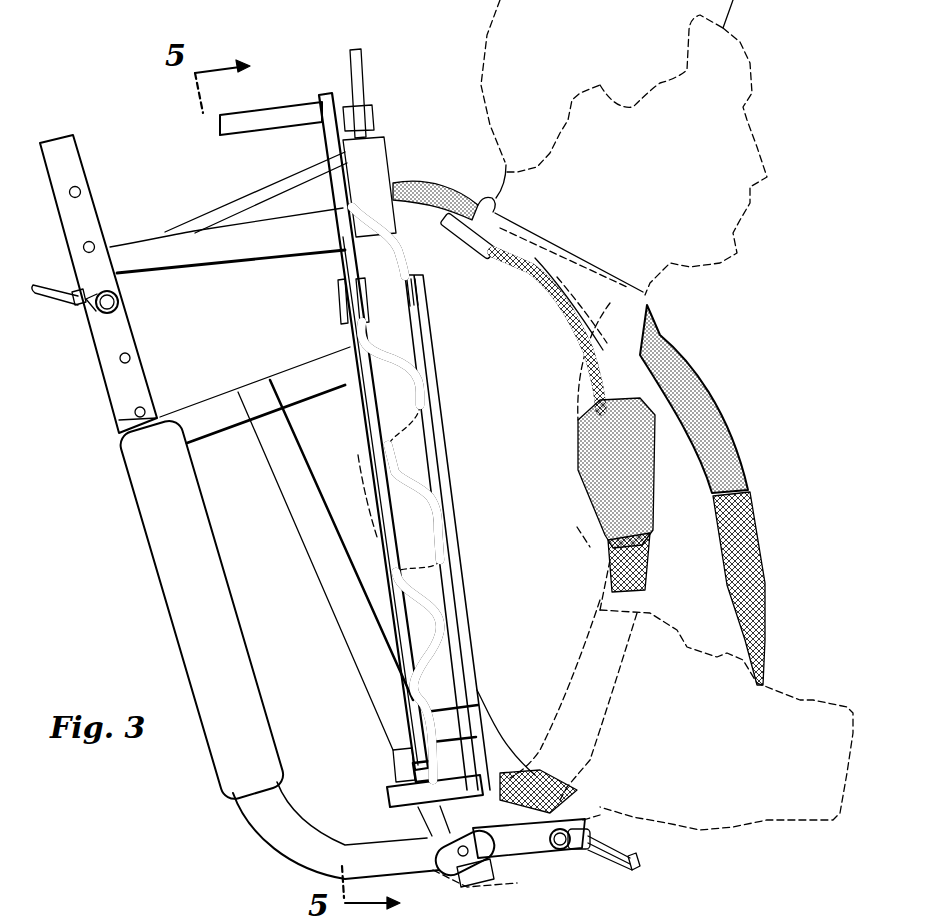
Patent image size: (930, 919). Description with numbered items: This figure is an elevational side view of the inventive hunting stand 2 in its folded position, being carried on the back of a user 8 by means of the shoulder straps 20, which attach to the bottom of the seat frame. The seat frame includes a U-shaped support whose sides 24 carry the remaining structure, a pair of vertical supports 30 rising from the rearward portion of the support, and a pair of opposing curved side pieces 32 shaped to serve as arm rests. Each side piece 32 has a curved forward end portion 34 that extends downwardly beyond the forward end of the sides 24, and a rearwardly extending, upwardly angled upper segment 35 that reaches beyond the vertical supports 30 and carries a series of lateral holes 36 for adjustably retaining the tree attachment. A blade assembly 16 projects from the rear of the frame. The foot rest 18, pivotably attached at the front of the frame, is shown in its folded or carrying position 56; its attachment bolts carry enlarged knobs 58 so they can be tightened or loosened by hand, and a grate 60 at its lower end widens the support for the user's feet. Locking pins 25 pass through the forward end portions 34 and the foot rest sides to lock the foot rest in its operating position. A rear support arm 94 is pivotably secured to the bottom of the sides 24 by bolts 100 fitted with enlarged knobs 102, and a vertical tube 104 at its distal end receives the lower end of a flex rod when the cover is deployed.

The hunting stand 2 is at (146, 106).
The user 8 is at (607, 323).
The blade assembly 16 is at (370, 92).
The foot rest 18 is at (310, 527).
The shoulder straps 20 is at (690, 377).
The sides 24 is at (397, 397).
The locking pins 25 is at (63, 303).
The vertical supports 30 is at (205, 245).
The curved side pieces 32 is at (135, 383).
The curved forward end portions 34 is at (380, 847).
The upper segments 35 is at (118, 418).
The lateral holes 36 is at (92, 243).
The folded or carrying position 56 is at (246, 558).
The enlarged knobs 58 is at (475, 847).
The grate 60 is at (310, 365).
The rear support arms 94 is at (446, 462).
The bolts 100 is at (345, 288).
The enlarged knobs 102 is at (400, 760).
The vertical tube 104 is at (265, 115).